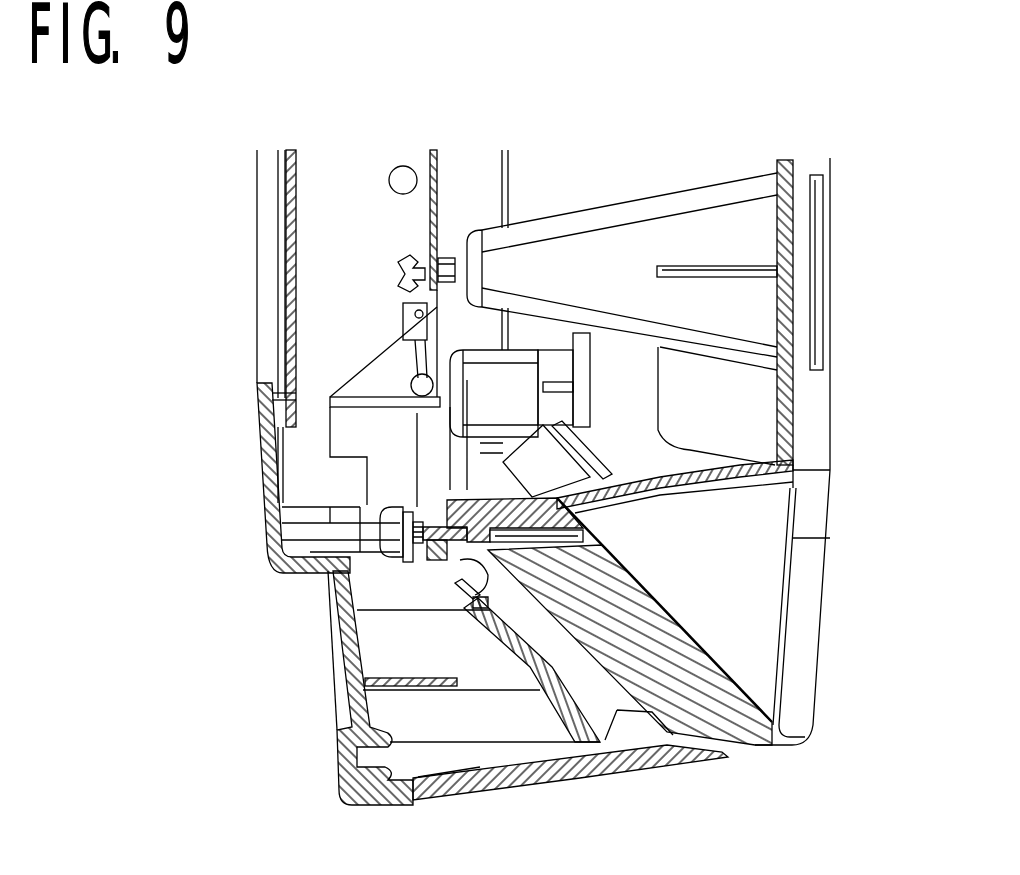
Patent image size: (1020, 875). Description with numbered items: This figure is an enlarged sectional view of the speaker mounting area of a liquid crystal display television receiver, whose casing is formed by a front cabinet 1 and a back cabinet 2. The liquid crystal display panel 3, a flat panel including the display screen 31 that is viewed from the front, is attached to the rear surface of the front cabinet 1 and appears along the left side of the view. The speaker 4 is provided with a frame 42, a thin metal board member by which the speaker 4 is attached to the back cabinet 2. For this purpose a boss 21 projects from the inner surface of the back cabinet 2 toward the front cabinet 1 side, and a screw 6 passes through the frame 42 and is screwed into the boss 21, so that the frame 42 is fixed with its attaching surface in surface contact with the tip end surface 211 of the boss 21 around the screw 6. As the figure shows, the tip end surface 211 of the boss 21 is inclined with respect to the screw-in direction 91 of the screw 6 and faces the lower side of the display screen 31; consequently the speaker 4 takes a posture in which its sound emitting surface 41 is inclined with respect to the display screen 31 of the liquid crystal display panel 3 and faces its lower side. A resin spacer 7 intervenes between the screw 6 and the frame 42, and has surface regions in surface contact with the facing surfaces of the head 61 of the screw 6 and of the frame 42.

The front cabinet 1 is at (263, 560).
The back cabinet 2 is at (813, 507).
The liquid crystal display panel 3 is at (237, 288).
The display screen 31 is at (291, 232).
The speaker 4 is at (530, 725).
The sound emitting surface 41 is at (562, 722).
The frame 42 is at (460, 585).
The screw 6 is at (398, 490).
The head 61 is at (427, 523).
The spacer 7 is at (443, 550).
The boss 21 is at (474, 546).
The tip end surface 211 is at (453, 557).
The screw-in direction 91 is at (585, 537).